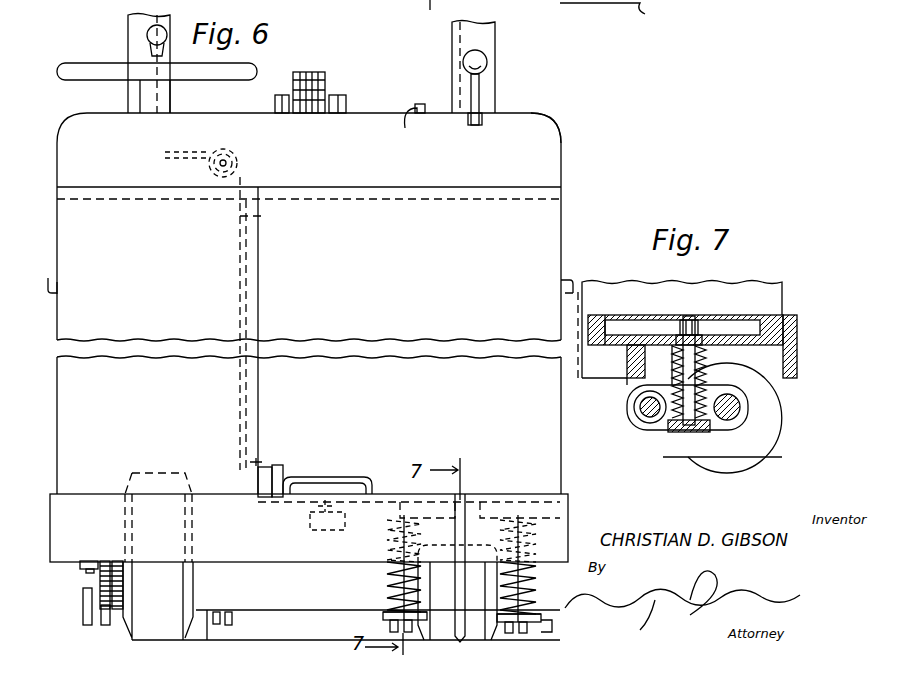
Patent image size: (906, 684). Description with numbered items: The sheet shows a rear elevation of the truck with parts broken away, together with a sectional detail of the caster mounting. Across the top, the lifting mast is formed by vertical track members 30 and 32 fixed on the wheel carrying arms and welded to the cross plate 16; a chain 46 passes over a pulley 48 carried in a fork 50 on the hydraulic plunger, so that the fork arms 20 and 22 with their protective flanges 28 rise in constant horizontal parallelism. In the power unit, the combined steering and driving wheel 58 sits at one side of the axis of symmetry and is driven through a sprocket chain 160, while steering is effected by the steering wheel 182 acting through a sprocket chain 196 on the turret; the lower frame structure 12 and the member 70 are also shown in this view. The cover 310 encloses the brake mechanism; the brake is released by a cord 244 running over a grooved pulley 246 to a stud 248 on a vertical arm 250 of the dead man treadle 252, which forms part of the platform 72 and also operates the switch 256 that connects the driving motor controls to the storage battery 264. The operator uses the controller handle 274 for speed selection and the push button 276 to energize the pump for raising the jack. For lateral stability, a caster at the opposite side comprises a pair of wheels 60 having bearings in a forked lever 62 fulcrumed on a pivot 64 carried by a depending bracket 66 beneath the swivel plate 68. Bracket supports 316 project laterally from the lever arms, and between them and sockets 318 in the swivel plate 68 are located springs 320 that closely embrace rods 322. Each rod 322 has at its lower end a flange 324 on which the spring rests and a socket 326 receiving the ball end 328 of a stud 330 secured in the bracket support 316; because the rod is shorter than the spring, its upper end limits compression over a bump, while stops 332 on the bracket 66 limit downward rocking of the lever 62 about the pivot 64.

In FIG. 6, the base frame 12 is at (122, 634).
In FIG. 6, the cross plate 16 is at (432, 15).
In FIG. 6, the forwardly extending arm 20 is at (542, 630).
In FIG. 6, the forwardly extending arm 22 is at (88, 614).
In FIG. 6, the protective flange 28 is at (390, 9).
In FIG. 6, the vertical track member 30 is at (128, 24).
In FIG. 6, the vertical track member 32 is at (483, 40).
In FIG. 6, the chain 46 is at (305, 112).
In FIG. 6, the pulley 48 is at (331, 86).
In FIG. 6, the fork 50 is at (336, 96).
In FIG. 6, the combined steering and driving wheel 58 is at (158, 556).
In FIG. 6, the caster wheel 60 is at (473, 580).
In FIG. 7, the caster wheel 60 is at (768, 438).
In FIG. 6, the forked lever 62 is at (395, 616).
In FIG. 7, the forked lever 62 is at (747, 409).
In FIG. 7, the pivot 64 is at (680, 432).
In FIG. 7, the depending bracket 66 is at (655, 366).
In FIG. 6, the swivel plate 68 is at (416, 546).
In FIG. 7, the swivel plate 68 is at (628, 332).
In FIG. 6, the rod 70 is at (478, 545).
In FIG. 7, the rod 70 is at (700, 318).
In FIG. 6, the platform 72 is at (537, 160).
In FIG. 6, the sprocket chain 160 is at (100, 590).
In FIG. 6, the steering wheel 182 is at (60, 64).
In FIG. 6, the sprocket chain 196 is at (623, 17).
In FIG. 6, the cord 244 is at (270, 323).
In FIG. 6, the grooved pulley 246 is at (210, 176).
In FIG. 6, the stud 248 is at (270, 463).
In FIG. 6, the vertical arm 250 is at (279, 463).
In FIG. 6, the dead man treadle 252 is at (342, 487).
In FIG. 6, the switch 256 is at (310, 520).
In FIG. 6, the storage battery 264 is at (561, 197).
In FIG. 6, the controller handle 274 is at (480, 88).
In FIG. 6, the push button 276 is at (415, 129).
In FIG. 6, the cover 310 is at (75, 128).
In FIG. 6, the bracket support 316 is at (385, 612).
In FIG. 7, the bracket support 316 is at (690, 432).
In FIG. 7, the socket 318 is at (705, 324).
In FIG. 6, the spring 320 is at (390, 538).
In FIG. 7, the spring 320 is at (700, 397).
In FIG. 6, the rod 322 is at (555, 581).
In FIG. 7, the rod 322 is at (690, 316).
In FIG. 7, the flange 324 is at (705, 432).
In FIG. 7, the socket 326 is at (686, 432).
In FIG. 7, the ball end 328 is at (695, 432).
In FIG. 7, the stud 330 is at (700, 432).
In FIG. 7, the stop 332 is at (628, 384).